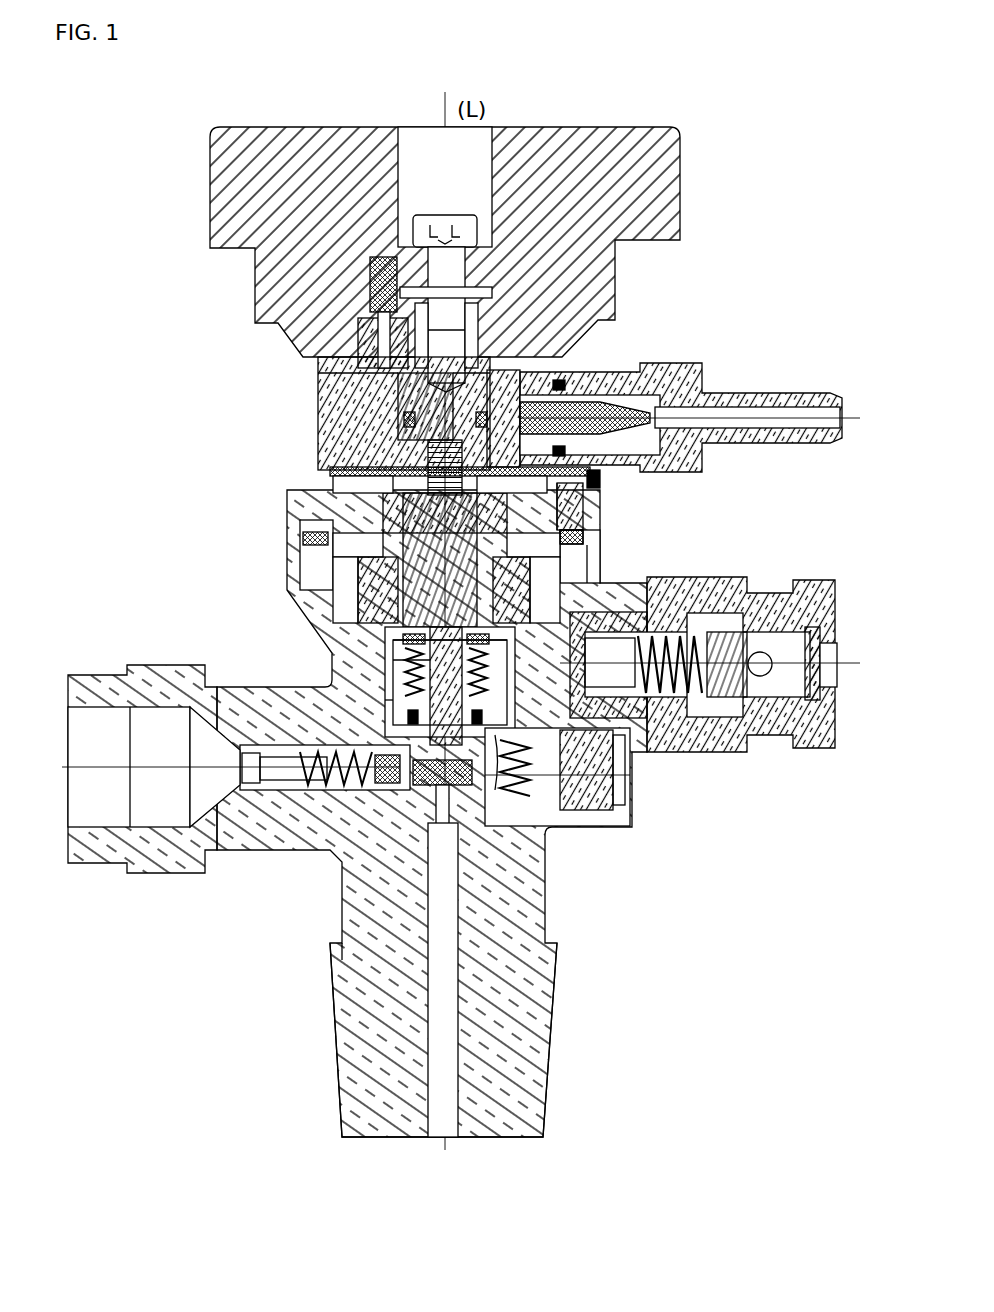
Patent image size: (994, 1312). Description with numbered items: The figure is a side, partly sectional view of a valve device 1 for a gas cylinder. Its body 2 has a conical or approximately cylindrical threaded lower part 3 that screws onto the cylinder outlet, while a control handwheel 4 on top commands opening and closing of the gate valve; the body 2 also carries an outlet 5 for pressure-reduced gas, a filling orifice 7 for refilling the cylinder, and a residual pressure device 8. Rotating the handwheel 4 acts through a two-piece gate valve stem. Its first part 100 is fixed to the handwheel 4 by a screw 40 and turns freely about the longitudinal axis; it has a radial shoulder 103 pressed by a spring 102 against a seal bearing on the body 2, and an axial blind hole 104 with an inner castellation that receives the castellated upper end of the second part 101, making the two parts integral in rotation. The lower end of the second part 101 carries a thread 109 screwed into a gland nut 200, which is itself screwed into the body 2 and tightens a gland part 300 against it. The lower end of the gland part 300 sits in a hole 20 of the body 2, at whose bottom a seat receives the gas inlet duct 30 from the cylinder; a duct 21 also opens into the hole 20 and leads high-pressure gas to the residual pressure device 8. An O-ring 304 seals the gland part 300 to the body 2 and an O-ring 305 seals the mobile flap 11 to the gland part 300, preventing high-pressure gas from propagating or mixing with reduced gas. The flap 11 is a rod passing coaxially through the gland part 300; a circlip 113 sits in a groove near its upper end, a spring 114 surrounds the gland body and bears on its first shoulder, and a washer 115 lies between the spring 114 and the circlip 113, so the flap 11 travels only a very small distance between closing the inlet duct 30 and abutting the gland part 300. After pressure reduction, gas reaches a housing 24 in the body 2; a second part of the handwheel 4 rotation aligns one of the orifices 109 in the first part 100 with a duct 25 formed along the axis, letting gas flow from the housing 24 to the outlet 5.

The valve device 1 is at (170, 150).
The body 2 is at (535, 915).
The lower part 3 is at (563, 1072).
The control handwheel 4 is at (210, 222).
The outlet 5 is at (742, 392).
The filling orifice 7 is at (64, 765).
The residual pressure device 8 is at (650, 792).
The mobile flap 11 is at (400, 682).
The hole 20 is at (405, 787).
The duct 21 is at (600, 812).
The housing 24 is at (312, 506).
The duct 25 is at (573, 475).
The gas inlet duct 30 is at (548, 858).
The screw 40 is at (462, 213).
The first part of the gate valve stem 100 is at (587, 513).
The second part of the gate valve stem 101 is at (590, 575).
The spring 102 is at (583, 537).
The radial shoulder 103 is at (330, 452).
The blind hole 104 is at (380, 495).
The thread 109 is at (355, 490).
The circlip 113 is at (395, 633).
The spring 114 is at (540, 718).
The washer 115 is at (430, 646).
The gland nut 200 is at (355, 588).
The gland part 300 is at (548, 800).
The O-ring 304 is at (550, 832).
The O-ring 305 is at (385, 700).